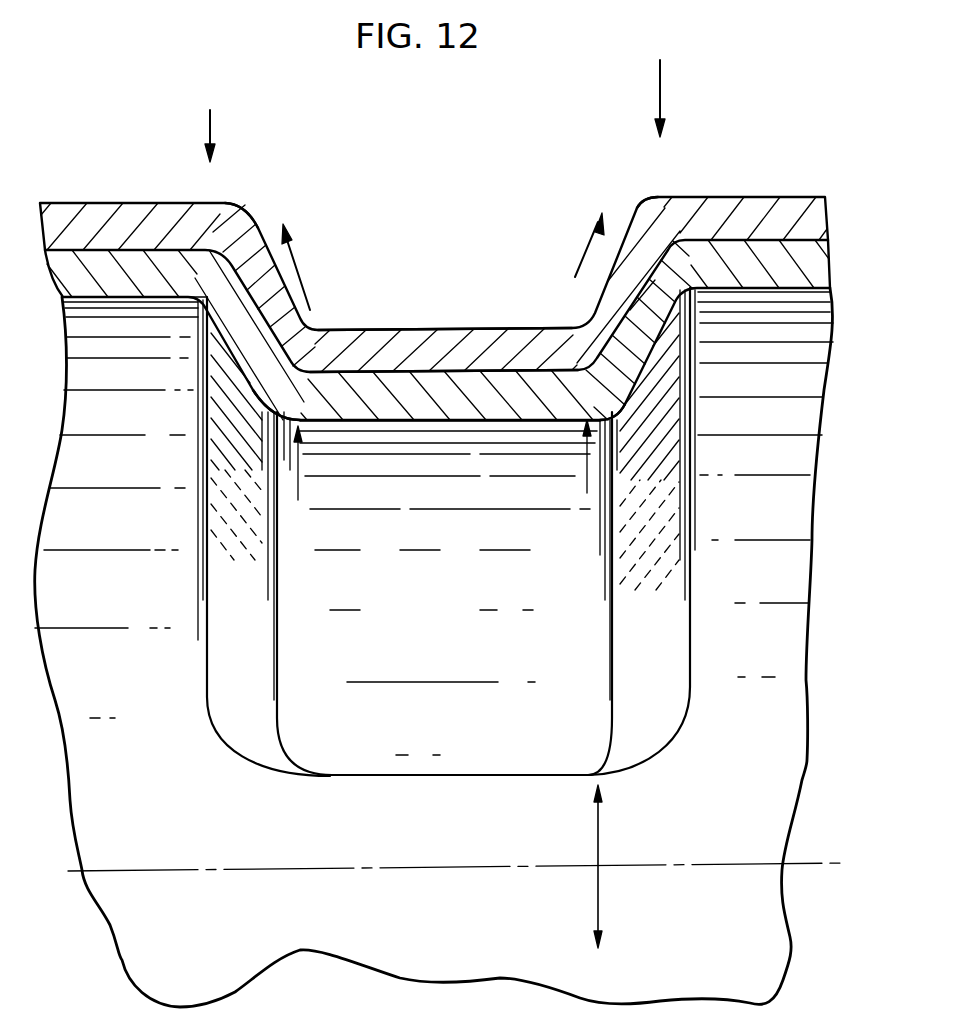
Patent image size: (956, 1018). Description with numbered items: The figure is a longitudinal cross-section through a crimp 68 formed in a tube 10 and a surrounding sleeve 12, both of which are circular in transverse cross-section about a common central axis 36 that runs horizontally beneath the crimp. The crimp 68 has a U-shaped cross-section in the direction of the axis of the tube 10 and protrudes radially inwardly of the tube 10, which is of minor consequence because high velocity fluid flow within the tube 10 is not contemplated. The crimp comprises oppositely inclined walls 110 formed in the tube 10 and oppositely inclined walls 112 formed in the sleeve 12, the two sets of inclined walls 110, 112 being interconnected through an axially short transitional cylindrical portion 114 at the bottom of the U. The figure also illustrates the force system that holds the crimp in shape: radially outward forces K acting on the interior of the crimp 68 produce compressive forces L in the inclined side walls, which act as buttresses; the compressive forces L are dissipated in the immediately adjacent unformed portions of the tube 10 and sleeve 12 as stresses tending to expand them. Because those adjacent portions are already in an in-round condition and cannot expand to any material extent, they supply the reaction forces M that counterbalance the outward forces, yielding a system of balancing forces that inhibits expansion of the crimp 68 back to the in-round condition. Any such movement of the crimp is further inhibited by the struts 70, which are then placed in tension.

The tube 10 is at (773, 260).
The sleeve 12 is at (737, 196).
The central axis 36 is at (704, 845).
The crimp 68 is at (440, 328).
The strut 70 is at (596, 842).
The oppositely inclined walls of tube 110 is at (262, 368).
The oppositely inclined walls of sleeve 112 is at (253, 233).
The transitional cylindrical portion 114 is at (490, 353).
The radially outward forces K is at (300, 490).
The compressive forces L is at (303, 277).
The reaction forces M is at (431, 99).